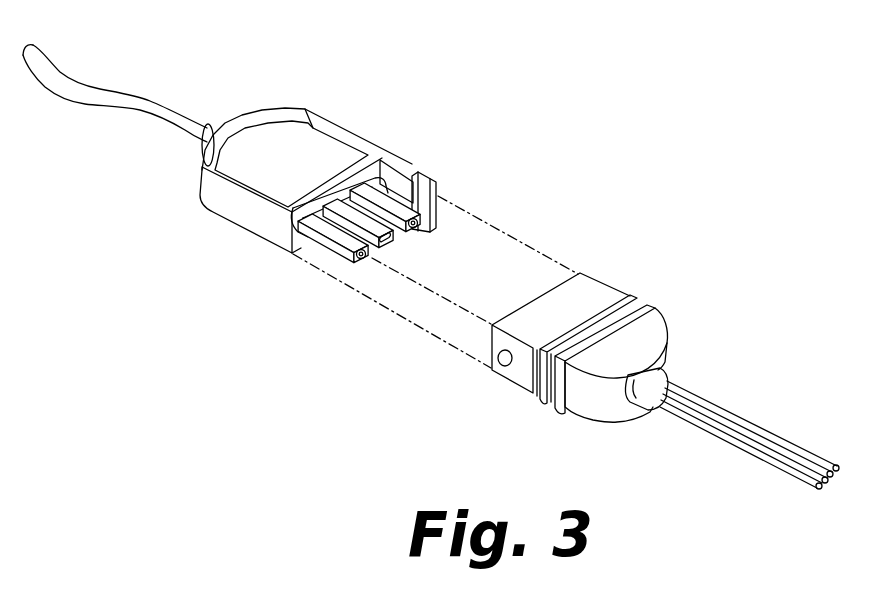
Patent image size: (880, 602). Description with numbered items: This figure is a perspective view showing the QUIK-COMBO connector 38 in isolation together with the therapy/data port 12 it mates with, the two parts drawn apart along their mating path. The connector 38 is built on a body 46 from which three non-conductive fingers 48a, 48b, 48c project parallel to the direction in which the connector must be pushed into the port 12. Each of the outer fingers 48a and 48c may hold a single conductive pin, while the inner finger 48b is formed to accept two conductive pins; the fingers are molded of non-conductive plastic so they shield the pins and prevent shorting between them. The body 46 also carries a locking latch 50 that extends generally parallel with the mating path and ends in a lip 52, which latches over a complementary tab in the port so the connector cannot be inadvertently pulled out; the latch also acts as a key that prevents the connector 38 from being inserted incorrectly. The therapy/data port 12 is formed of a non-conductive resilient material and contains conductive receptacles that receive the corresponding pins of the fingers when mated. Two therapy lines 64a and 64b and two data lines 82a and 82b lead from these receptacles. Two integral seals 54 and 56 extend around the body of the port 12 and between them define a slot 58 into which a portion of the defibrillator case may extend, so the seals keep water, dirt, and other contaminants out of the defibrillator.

The connector 38 is at (270, 117).
The body 46 is at (313, 165).
The locking latch 50 is at (397, 161).
The lip 52 is at (420, 182).
The outer finger 48a is at (359, 260).
The inner finger 48b is at (392, 246).
The outer finger 48c is at (420, 227).
The therapy/data port 12 is at (588, 295).
The seal 54 is at (630, 296).
The seal 56 is at (652, 306).
The slot 58 is at (541, 422).
The therapy line 64a is at (718, 412).
The therapy line 64b is at (702, 423).
The data line 82a is at (782, 450).
The data line 82b is at (798, 463).